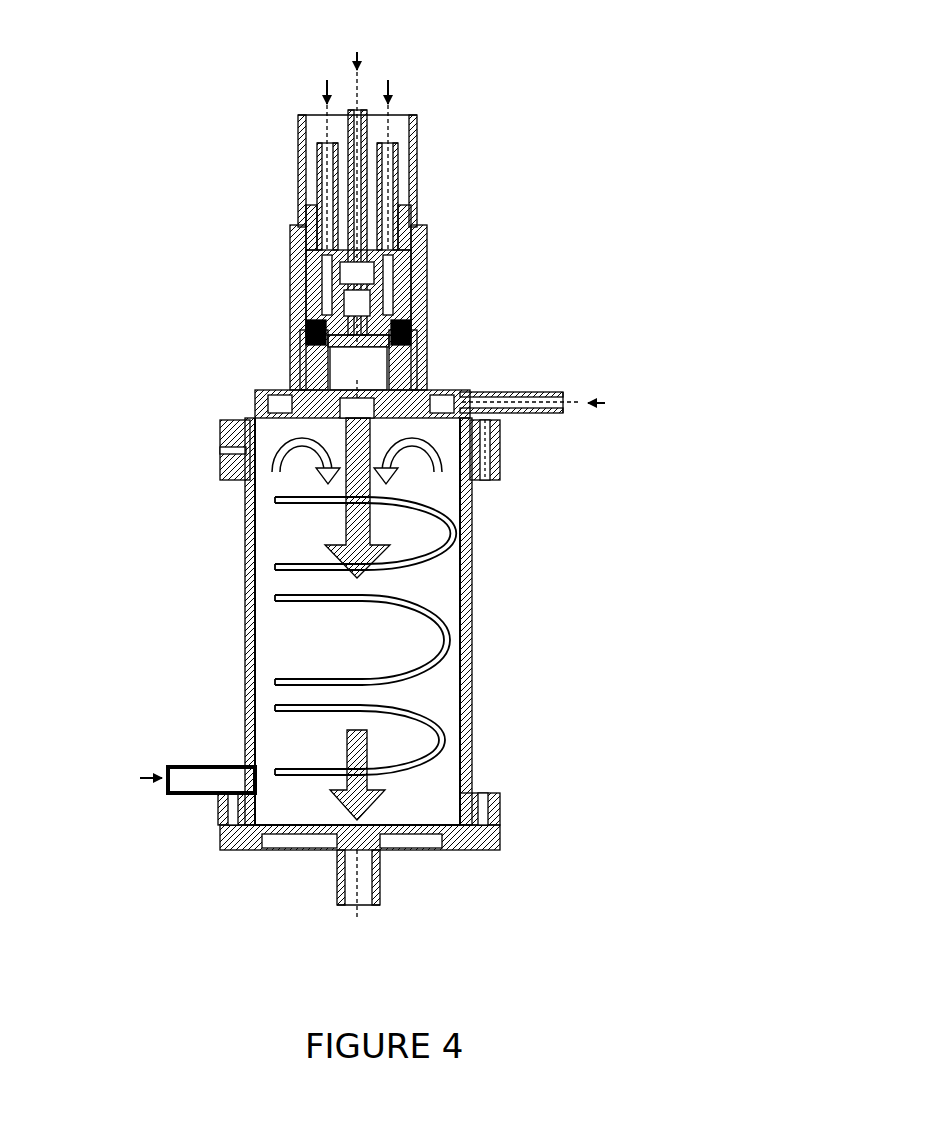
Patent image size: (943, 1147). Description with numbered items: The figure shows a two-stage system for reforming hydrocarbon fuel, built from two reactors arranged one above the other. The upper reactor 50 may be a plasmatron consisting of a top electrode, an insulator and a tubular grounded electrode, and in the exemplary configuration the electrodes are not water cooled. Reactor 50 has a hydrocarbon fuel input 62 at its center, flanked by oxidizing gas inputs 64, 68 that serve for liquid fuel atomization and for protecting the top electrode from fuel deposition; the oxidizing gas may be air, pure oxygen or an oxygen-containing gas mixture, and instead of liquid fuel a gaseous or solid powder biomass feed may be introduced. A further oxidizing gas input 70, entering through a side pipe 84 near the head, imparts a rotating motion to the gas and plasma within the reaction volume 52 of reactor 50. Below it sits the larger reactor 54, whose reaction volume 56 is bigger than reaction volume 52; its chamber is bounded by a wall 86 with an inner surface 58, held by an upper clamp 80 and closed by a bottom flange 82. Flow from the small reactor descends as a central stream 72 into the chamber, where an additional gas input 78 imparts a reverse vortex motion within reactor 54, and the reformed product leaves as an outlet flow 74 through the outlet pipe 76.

The reactor 50 is at (424, 328).
The reaction volume 52 is at (355, 378).
The reactor 54 is at (475, 582).
The reaction volume 56 is at (300, 655).
The chamber inner wall 58 is at (472, 632).
The hydrocarbon fuel input 62 is at (356, 36).
The oxidizing gas input 64 is at (303, 71).
The oxidizing gas input 68 is at (410, 78).
The oxidizing gas input 70 is at (619, 413).
The downward central flow 72 is at (390, 522).
The outlet flow 74 is at (370, 755).
The outlet pipe 76 is at (358, 910).
The additional gas input 78 is at (172, 773).
The upper clamp 80 is at (218, 434).
The bottom flange 82 is at (437, 840).
The inlet pipe 84 is at (455, 388).
The chamber wall 86 is at (245, 517).